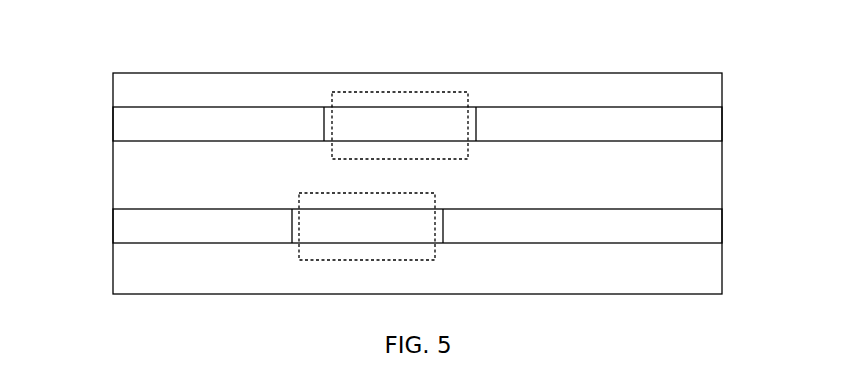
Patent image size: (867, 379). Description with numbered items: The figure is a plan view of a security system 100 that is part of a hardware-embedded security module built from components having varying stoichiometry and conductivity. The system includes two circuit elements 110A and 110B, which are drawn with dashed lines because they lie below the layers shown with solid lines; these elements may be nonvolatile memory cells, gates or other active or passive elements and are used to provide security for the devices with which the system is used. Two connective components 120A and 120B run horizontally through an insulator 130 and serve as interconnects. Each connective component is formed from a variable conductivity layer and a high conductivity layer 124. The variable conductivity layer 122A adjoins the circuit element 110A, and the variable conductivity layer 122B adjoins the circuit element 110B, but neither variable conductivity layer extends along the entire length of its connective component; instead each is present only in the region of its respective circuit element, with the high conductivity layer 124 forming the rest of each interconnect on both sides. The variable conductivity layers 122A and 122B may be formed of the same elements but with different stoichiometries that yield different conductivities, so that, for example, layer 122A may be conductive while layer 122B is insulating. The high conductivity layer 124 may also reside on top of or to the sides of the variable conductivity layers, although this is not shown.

The security system 100 is at (395, 36).
The circuit element 110A is at (317, 262).
The circuit element 110B is at (341, 91).
The connective component 120A is at (85, 228).
The connective component 120B is at (738, 124).
The variable conductivity layer 122A is at (367, 226).
The variable conductivity layer 122B is at (400, 124).
The high conductivity layer 124 is at (417, 175).
The insulator 130 is at (417, 183).